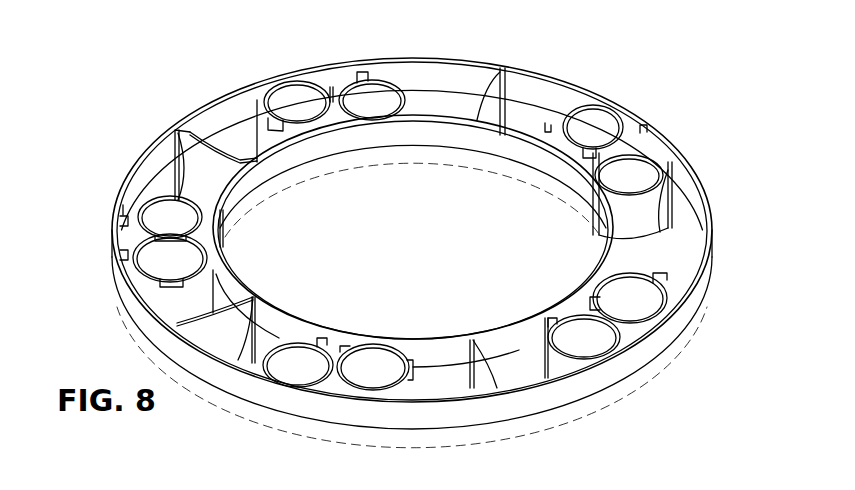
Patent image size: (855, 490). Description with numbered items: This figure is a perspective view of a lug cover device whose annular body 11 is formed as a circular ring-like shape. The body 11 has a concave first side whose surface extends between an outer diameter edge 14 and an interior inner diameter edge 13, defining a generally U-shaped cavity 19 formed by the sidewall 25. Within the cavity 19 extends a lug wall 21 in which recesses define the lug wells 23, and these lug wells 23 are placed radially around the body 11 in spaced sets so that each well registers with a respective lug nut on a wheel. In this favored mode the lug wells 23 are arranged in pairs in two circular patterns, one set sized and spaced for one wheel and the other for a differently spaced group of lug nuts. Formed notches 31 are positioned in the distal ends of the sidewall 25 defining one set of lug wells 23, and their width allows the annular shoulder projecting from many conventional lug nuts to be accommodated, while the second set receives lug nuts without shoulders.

The annular body 11 is at (567, 80).
The inner diameter edge 13 is at (277, 147).
The outer diameter edge 14 is at (200, 108).
The cavity 19 is at (430, 93).
The lug wall 21 is at (630, 322).
The lug wells 23 is at (292, 102).
The sidewall 25 is at (657, 212).
The notches 31 is at (605, 153).